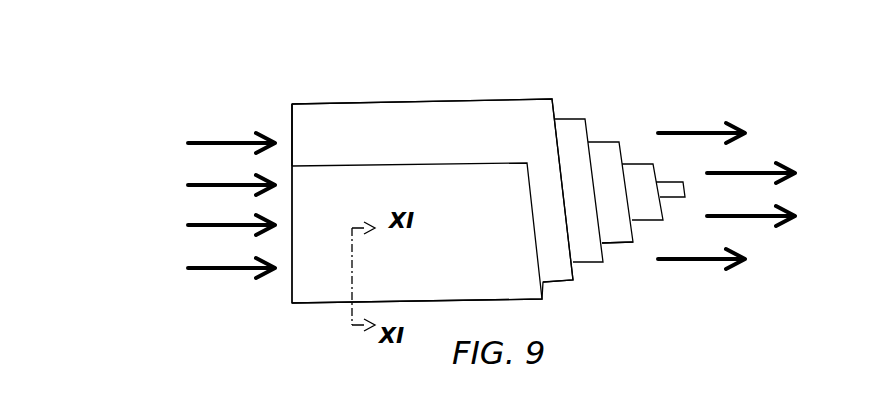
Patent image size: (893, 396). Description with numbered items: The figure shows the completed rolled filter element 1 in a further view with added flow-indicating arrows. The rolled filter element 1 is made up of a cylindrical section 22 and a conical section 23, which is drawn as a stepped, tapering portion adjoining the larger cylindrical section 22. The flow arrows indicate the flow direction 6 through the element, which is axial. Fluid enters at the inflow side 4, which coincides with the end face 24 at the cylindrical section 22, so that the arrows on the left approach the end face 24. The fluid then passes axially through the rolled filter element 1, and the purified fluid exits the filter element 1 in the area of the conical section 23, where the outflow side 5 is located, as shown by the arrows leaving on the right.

The rolled filter element 1 is at (276, 85).
The inflow side 4 is at (290, 120).
The outflow side 5 is at (618, 247).
The flow direction 6 is at (229, 273).
The cylindrical section 22 is at (424, 90).
The conical section 23 is at (614, 120).
The end face 24 is at (290, 279).